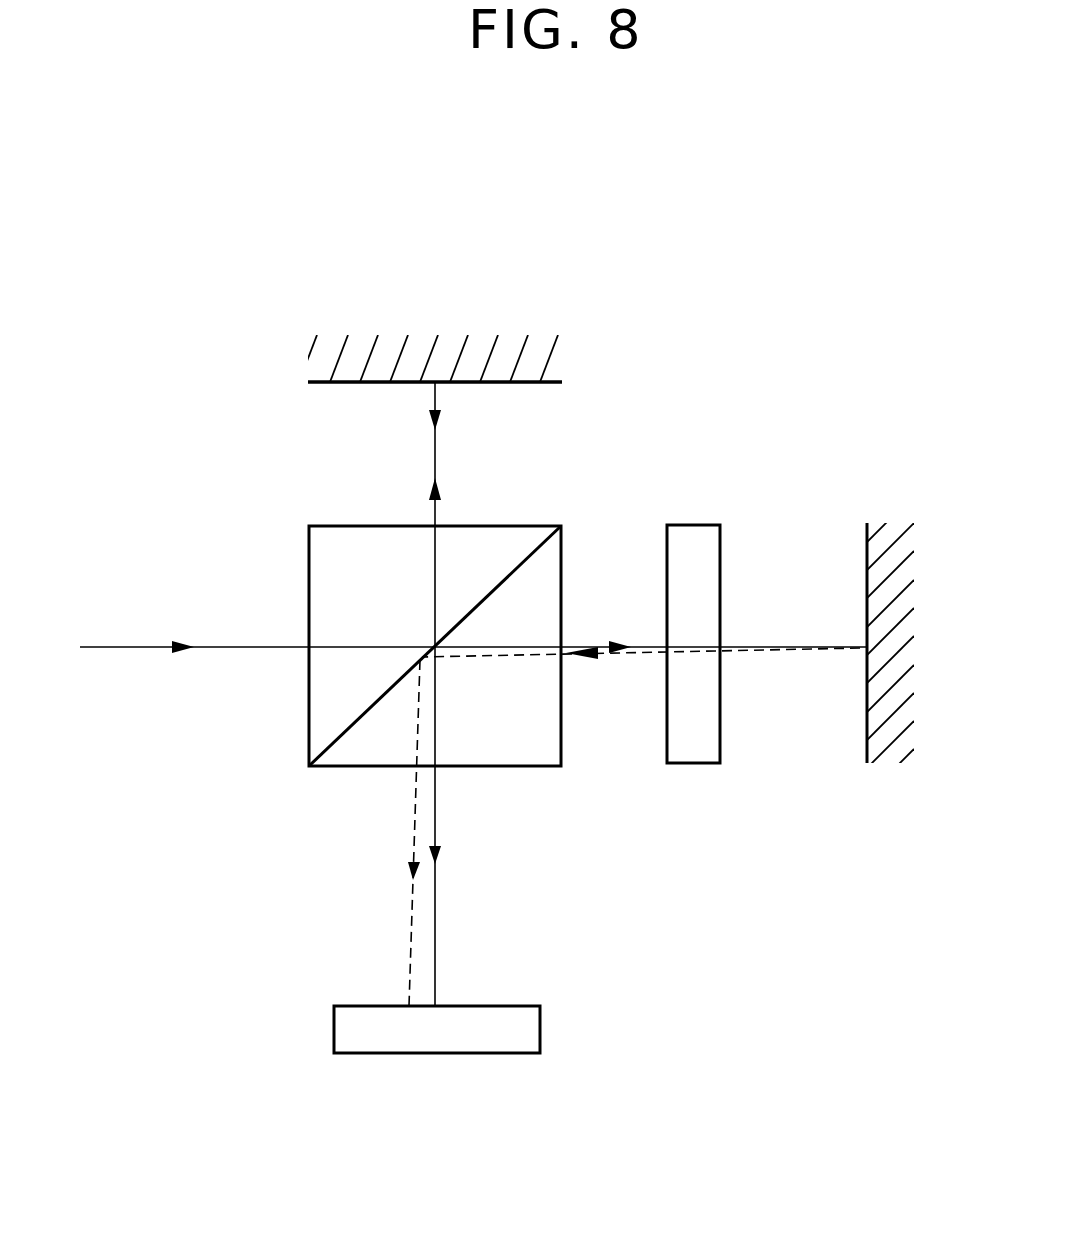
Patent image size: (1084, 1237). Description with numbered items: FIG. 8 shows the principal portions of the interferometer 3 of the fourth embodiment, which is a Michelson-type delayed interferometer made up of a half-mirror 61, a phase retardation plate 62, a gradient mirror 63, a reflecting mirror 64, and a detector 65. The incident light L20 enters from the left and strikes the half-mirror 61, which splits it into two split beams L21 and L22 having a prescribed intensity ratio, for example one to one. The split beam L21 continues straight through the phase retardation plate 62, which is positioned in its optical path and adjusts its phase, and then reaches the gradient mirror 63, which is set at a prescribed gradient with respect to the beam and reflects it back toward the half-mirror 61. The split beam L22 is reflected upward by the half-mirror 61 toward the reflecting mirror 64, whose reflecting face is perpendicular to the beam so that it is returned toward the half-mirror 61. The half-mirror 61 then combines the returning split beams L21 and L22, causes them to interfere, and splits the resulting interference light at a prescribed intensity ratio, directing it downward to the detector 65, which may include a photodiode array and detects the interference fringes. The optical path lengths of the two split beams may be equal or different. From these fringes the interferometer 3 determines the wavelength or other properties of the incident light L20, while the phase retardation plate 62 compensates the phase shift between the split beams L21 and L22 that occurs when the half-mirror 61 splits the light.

The interferometer 3 is at (818, 300).
The half-mirror 61 is at (522, 524).
The phase retardation plate 62 is at (722, 556).
The gradient mirror 63 is at (866, 546).
The reflecting mirror 64 is at (538, 383).
The detector 65 is at (510, 1006).
The incident light L20 is at (147, 647).
The split beam L21 is at (603, 645).
The split beam L22 is at (434, 453).